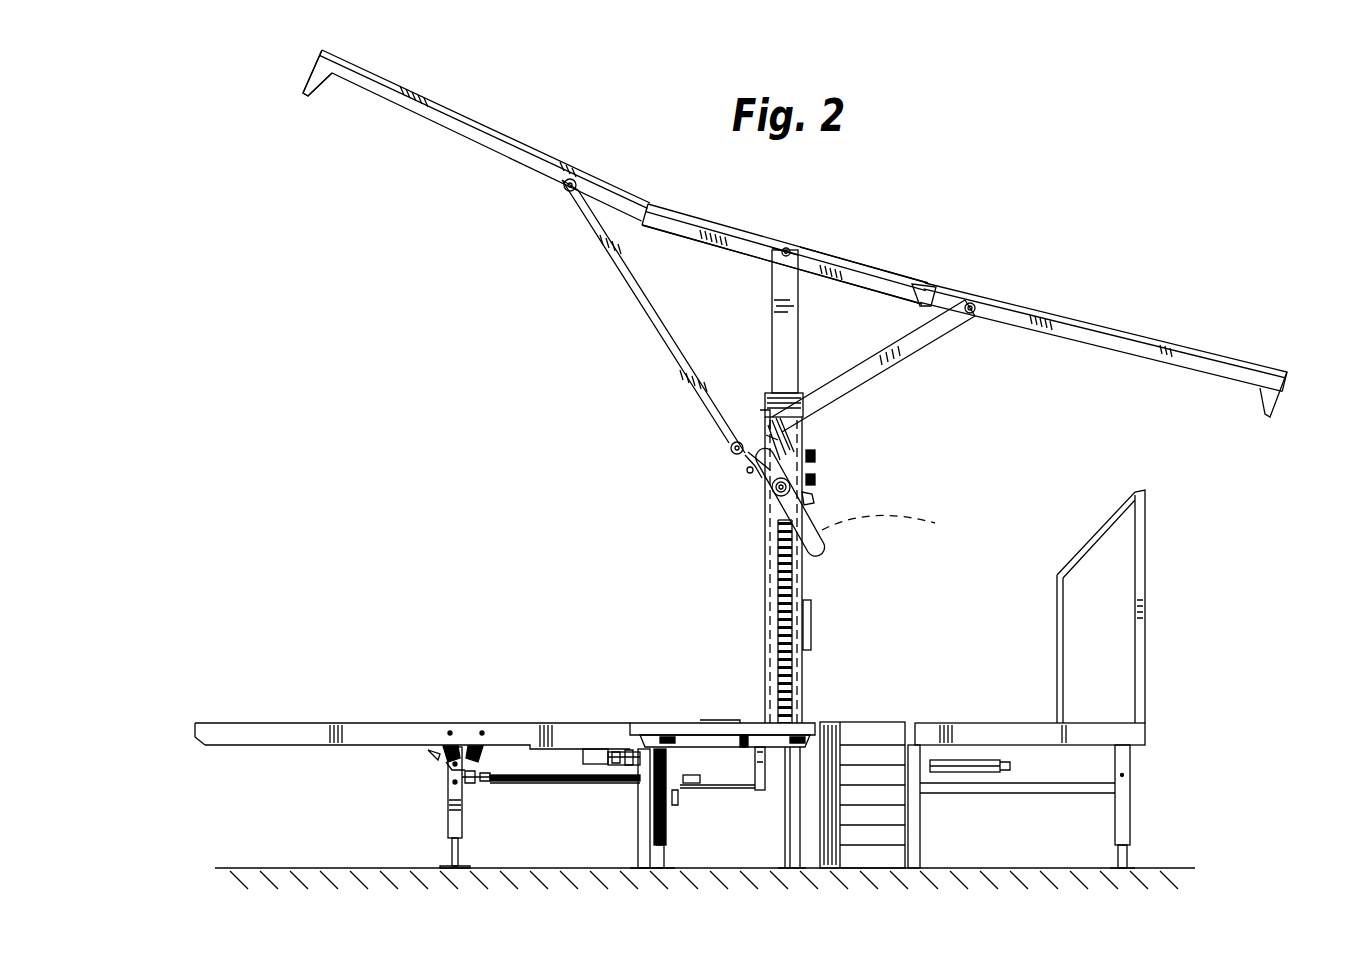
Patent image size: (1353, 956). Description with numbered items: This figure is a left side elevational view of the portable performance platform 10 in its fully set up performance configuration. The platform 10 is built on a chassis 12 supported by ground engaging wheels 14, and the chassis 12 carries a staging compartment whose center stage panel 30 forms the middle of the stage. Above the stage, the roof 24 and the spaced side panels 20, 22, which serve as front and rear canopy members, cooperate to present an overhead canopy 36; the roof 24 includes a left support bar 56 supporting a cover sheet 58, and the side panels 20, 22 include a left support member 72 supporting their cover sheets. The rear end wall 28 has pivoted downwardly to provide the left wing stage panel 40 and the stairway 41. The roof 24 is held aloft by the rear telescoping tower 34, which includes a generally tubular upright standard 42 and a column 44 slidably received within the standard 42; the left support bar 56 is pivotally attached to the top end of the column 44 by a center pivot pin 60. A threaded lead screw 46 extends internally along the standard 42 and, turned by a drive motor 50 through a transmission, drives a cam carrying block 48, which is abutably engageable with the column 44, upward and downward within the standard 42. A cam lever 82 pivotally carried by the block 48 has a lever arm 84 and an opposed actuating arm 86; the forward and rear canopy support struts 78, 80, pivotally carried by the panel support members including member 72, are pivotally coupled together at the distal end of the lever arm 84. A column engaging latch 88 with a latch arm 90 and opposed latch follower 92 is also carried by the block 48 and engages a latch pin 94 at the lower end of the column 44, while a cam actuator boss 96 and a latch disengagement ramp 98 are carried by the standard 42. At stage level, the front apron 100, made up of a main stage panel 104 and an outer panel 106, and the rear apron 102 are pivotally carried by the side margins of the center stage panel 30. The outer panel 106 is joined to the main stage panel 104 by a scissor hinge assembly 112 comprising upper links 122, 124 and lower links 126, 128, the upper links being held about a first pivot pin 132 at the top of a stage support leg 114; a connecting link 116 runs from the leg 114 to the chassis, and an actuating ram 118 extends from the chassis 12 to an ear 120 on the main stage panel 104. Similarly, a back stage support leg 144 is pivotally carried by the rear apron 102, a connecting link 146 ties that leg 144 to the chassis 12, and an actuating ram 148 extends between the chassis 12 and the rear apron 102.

The portable performance platform 10 is at (1018, 272).
The chassis 12 is at (693, 723).
The ground engaging wheels 14 is at (640, 835).
The side panel 20 is at (455, 108).
The side panel 22 is at (1120, 333).
The roof 24 is at (738, 240).
The rear end wall 28 is at (728, 788).
The center stage panel 30 is at (745, 742).
The telescoping tower 34 is at (800, 420).
The overhead canopy 36 is at (937, 248).
The left wing stage panel 40 is at (637, 752).
The stairway 41 is at (848, 745).
The upright standard 42 is at (802, 580).
The column 44 is at (800, 340).
The threaded lead screw 46 is at (792, 672).
The cam carrying block 48 is at (810, 478).
The drive motor 50 is at (760, 790).
The left support bar 56 is at (843, 270).
The cover sheet 58 is at (684, 212).
The center pivot pin 60 is at (790, 248).
The left support member 72 is at (500, 142).
The forward canopy support strut 78 is at (668, 342).
The rear canopy support strut 80 is at (900, 348).
The cam lever 82 is at (772, 487).
The lever arm 84 is at (760, 470).
The actuating arm 86 is at (822, 545).
The column engaging latch 88 is at (748, 472).
The latch arm 90 is at (770, 415).
The latch follower 92 is at (894, 525).
The latch pin 94 is at (808, 457).
The cam actuator boss 96 is at (808, 498).
The latch disengagement ramp 98 is at (812, 625).
The front apron 100 is at (360, 700).
The rear apron 102 is at (970, 715).
The main stage panel 104 is at (492, 735).
The outer panel 106 is at (280, 738).
The scissor hinge assembly 112 is at (430, 765).
The stage support leg 114 is at (448, 825).
The connecting link 116 is at (568, 785).
The actuating ram 118 is at (613, 753).
The ear 120 is at (585, 782).
The upper link 122 is at (450, 745).
The upper link 124 is at (470, 745).
The lower link 126 is at (428, 752).
The lower link 128 is at (500, 777).
The first pivot pin 132 is at (450, 782).
The back stage support leg 144 is at (1132, 808).
The connecting link 146 is at (1040, 795).
The actuating ram 148 is at (960, 770).